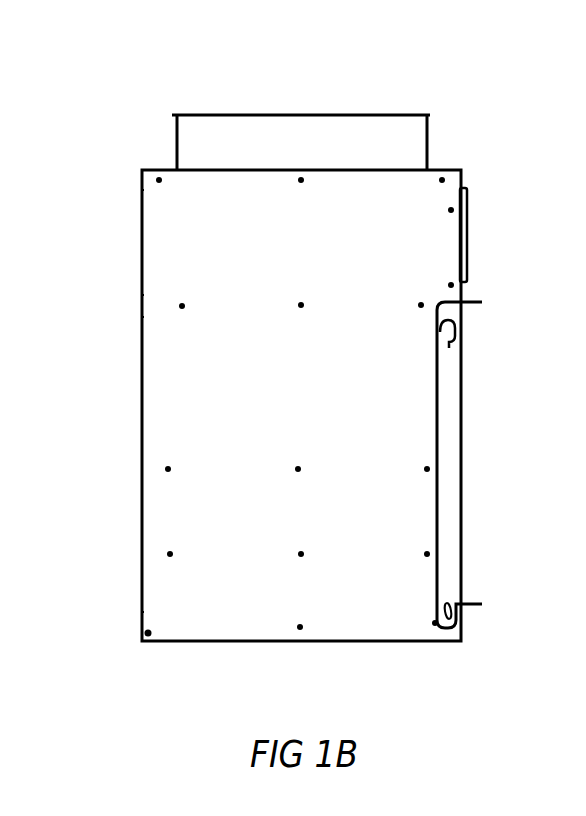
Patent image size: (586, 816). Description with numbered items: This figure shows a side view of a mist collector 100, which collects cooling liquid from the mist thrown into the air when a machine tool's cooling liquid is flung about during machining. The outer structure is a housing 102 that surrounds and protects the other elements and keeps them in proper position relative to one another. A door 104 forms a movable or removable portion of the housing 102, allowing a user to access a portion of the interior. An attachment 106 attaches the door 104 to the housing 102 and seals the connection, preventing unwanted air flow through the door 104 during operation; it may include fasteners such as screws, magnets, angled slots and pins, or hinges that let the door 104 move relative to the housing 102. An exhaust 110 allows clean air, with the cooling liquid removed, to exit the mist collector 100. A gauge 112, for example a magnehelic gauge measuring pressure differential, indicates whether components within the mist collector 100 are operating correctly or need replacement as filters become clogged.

The power supply unit 100 is at (150, 75).
The housing 102 is at (202, 241).
The mounting bracket 104 is at (447, 518).
The hook 106 is at (447, 330).
The top cover 110 is at (410, 138).
The side strip 112 is at (465, 217).